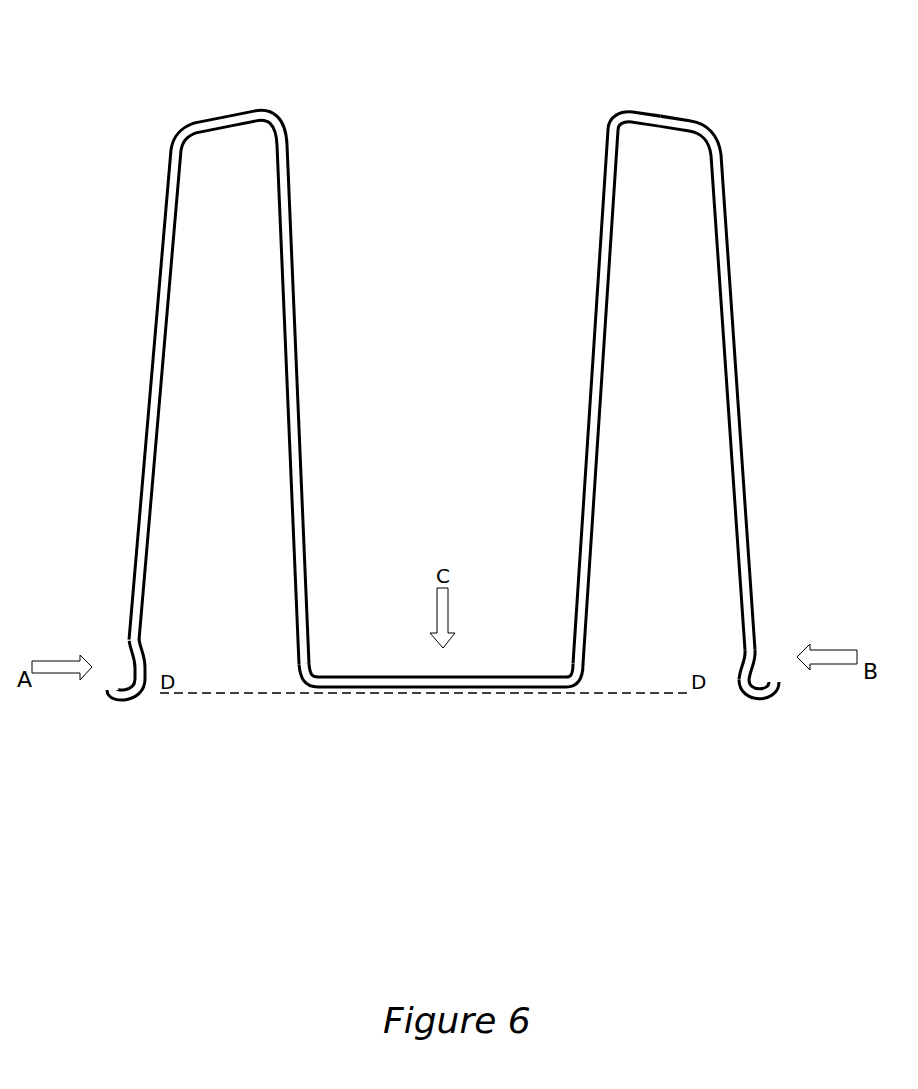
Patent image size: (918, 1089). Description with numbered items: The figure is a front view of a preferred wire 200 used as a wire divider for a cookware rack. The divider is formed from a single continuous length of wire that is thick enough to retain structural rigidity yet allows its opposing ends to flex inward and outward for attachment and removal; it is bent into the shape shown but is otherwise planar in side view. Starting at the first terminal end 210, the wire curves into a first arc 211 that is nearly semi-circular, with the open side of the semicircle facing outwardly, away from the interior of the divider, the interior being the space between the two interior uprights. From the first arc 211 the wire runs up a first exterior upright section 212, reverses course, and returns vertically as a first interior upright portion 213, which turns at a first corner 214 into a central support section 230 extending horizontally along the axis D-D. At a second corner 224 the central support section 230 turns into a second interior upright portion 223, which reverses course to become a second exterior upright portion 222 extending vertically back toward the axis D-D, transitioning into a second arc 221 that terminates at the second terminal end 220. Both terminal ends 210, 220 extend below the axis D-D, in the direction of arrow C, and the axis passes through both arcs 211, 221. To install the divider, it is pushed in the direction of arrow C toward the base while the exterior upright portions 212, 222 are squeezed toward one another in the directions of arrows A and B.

The wire 200 is at (430, 402).
The first terminal end 210 is at (105, 697).
The first arc 211 is at (147, 683).
The first exterior upright section 212 is at (142, 464).
The first interior upright portion 213 is at (288, 398).
The first corner 214 is at (322, 677).
The second terminal end 220 is at (780, 690).
The second arc 221 is at (736, 665).
The second exterior upright portion 222 is at (741, 368).
The second interior upright portion 223 is at (590, 388).
The second corner 224 is at (566, 672).
The central support section 230 is at (432, 690).